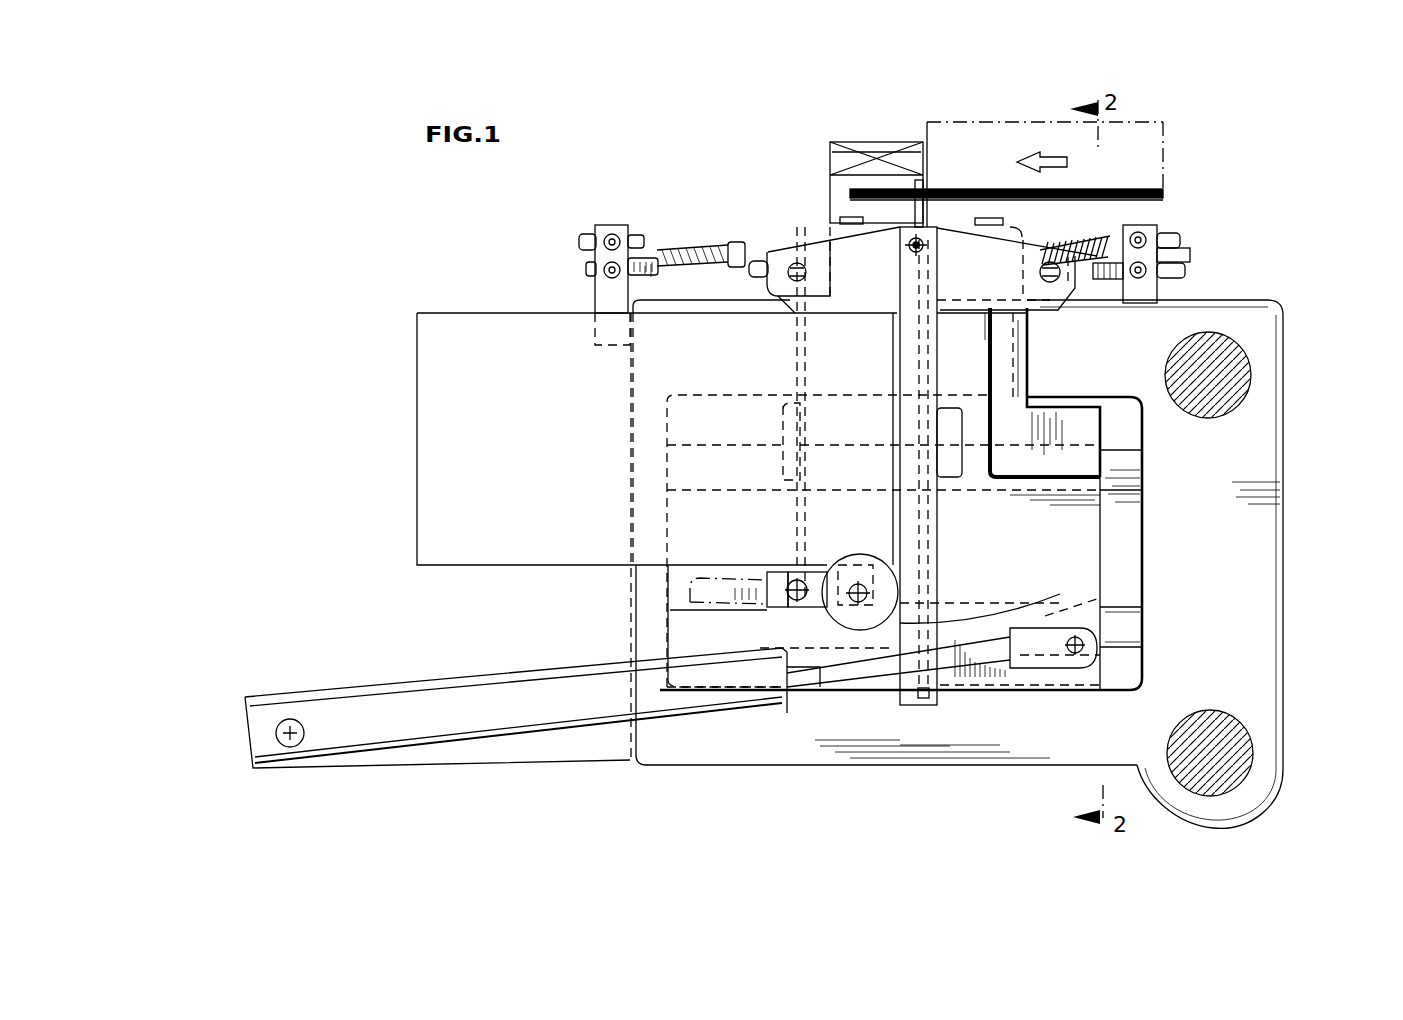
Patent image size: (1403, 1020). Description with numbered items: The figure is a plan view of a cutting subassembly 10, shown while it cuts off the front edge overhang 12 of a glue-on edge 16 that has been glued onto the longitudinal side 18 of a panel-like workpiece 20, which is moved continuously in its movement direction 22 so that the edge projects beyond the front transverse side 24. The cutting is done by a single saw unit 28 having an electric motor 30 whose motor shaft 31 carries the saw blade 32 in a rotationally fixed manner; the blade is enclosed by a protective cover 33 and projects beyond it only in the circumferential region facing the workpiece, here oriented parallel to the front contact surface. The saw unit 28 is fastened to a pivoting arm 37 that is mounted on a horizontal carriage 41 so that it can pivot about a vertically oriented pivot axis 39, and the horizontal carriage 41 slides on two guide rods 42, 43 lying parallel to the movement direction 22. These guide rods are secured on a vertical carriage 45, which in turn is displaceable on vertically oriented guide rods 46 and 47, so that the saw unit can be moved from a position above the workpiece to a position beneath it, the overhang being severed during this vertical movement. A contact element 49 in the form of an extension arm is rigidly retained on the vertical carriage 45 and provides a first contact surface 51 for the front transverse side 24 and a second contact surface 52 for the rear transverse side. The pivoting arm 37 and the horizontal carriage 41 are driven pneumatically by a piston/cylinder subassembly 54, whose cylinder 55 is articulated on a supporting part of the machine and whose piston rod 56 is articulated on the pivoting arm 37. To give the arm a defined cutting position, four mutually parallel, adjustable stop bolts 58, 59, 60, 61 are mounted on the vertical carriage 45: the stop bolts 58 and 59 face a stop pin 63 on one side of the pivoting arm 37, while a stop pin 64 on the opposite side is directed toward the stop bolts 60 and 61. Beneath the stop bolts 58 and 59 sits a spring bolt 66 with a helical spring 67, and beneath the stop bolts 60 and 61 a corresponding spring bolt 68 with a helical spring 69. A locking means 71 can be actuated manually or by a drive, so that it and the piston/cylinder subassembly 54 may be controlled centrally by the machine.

The cutting subassembly 10 is at (604, 200).
The front edge overhang 12 is at (830, 143).
The glue-on edge 16 is at (1163, 188).
The longitudinal side 18 is at (1172, 200).
The workpiece 20 is at (1150, 140).
The movement direction 22 is at (1068, 162).
The front transverse side 24 is at (922, 136).
The saw unit 28 is at (576, 579).
The electric motor 30 is at (508, 428).
The motor shaft 31 is at (910, 430).
The saw blade 32 is at (900, 224).
The protective cover 33 is at (900, 238).
The pivoting arm 37 is at (1100, 473).
The pivot axis 39 is at (918, 252).
The horizontal carriage 41 is at (1113, 432).
The guide rod 42 is at (1130, 457).
The guide rod 43 is at (1120, 635).
The vertical carriage 45 is at (1293, 416).
The guide rod 46 is at (1248, 365).
The guide rod 47 is at (1224, 781).
The contact element 49 is at (882, 133).
The first contact surface 51 is at (932, 160).
The second contact surface 52 is at (830, 158).
The piston/cylinder subassembly 54 is at (712, 735).
The cylinder 55 is at (504, 723).
The piston rod 56 is at (873, 663).
The stop bolt 58 is at (1188, 240).
The stop bolt 59 is at (1185, 270).
The stop bolt 60 is at (583, 238).
The stop bolt 61 is at (587, 270).
The stop pin 63 is at (1082, 282).
The stop pin 64 is at (755, 261).
The spring bolt 66 is at (1095, 238).
The helical spring 67 is at (1066, 248).
The spring bolt 68 is at (693, 238).
The helical spring 69 is at (648, 266).
The locking means 71 is at (829, 636).